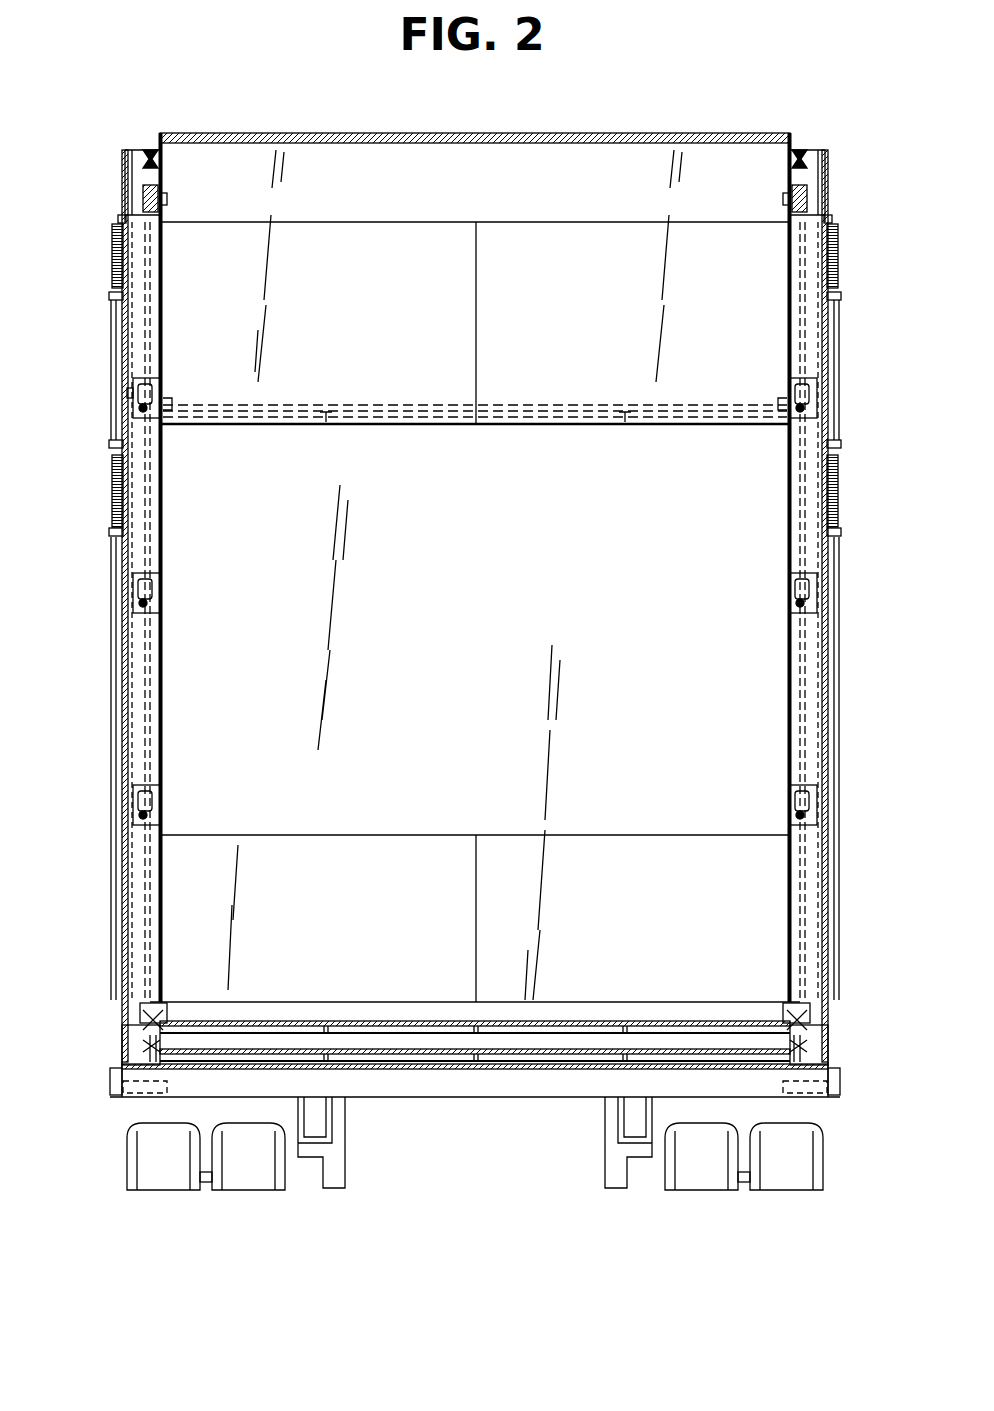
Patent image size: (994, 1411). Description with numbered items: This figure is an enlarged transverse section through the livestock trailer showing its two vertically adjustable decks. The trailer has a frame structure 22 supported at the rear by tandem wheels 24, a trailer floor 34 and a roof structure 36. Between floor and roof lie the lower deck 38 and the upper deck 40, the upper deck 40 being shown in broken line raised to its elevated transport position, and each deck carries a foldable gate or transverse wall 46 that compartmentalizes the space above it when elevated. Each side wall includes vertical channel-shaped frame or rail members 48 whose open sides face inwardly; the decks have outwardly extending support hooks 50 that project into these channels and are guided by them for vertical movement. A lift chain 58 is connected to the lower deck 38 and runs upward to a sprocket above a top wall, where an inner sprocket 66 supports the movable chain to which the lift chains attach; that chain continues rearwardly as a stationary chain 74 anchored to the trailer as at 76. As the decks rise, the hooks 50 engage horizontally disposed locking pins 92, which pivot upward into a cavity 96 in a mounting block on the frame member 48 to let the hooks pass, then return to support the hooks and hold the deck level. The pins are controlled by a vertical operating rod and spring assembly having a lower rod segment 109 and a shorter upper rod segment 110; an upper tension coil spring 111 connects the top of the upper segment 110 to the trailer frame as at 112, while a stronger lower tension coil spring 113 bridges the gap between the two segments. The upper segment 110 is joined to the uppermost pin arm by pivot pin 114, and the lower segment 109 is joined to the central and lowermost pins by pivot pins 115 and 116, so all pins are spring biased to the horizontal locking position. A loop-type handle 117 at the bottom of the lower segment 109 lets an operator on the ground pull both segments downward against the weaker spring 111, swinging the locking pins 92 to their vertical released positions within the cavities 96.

The frame structure 22 is at (420, 1097).
The tandem wheels 24 is at (148, 1160).
The trailer floor 34 is at (505, 1066).
The roof structure 36 is at (615, 133).
The lower deck 38 is at (288, 1052).
The upper deck 40 is at (540, 400).
The foldable gate or transverse wall 46 is at (338, 318).
The vertical frame or rail member 48 is at (135, 700).
The support hook 50 is at (172, 593).
The lift chain 58 is at (790, 545).
The inner sprocket 66 is at (165, 195).
The stationary chain 74 is at (152, 152).
The anchor 76 is at (805, 158).
The locking pin 92 is at (143, 406).
The cavity 96 is at (142, 385).
The lower rod segment 109 is at (118, 732).
The upper rod segment 110 is at (118, 302).
The tension coil spring 111 is at (150, 268).
The connection point 112 is at (130, 220).
The lower tension coil spring 113 is at (130, 496).
The pivot pin 114 is at (135, 395).
The pivot pin 115 is at (128, 590).
The pivot pin 116 is at (128, 795).
The loop-type handle 117 is at (112, 1075).